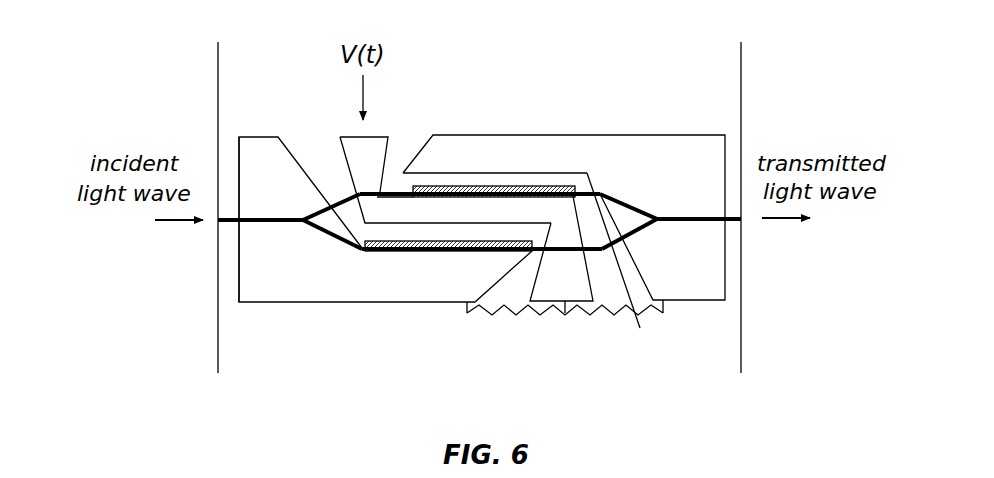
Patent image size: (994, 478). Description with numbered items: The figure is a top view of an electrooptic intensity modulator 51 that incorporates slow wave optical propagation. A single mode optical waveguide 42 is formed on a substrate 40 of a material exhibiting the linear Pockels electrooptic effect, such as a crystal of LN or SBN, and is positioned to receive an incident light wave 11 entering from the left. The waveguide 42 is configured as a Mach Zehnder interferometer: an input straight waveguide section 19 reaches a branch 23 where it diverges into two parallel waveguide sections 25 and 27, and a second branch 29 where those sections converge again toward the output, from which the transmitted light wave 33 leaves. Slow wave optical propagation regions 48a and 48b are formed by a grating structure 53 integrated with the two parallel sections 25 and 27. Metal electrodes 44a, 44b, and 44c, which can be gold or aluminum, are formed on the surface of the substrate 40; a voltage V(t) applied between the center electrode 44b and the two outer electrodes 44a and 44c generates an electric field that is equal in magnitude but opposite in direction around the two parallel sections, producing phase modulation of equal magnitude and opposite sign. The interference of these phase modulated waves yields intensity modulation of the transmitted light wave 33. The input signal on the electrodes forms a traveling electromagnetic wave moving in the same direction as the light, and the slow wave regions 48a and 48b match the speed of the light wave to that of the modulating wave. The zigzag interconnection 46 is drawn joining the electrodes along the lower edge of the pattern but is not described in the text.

The incident light wave 11 is at (173, 222).
The input straight waveguide section 19 is at (253, 218).
The branch 23 is at (290, 223).
The parallel waveguide section 25 is at (392, 190).
The parallel waveguide section 27 is at (640, 328).
The second branch 29 is at (660, 224).
The transmitted light wave 33 is at (775, 220).
The substrate 40 is at (389, 366).
The single mode optical waveguide 42 is at (272, 233).
The outer electrode 44a is at (432, 293).
The center electrode 44b is at (584, 290).
The outer electrode 44c is at (685, 200).
The ground interconnect 46 is at (573, 313).
The slow wave optical propagation region 48a is at (465, 300).
The slow wave optical propagation region 48b is at (478, 185).
The electrooptic intensity modulator 51 is at (172, 415).
The grating structure 53 is at (547, 177).